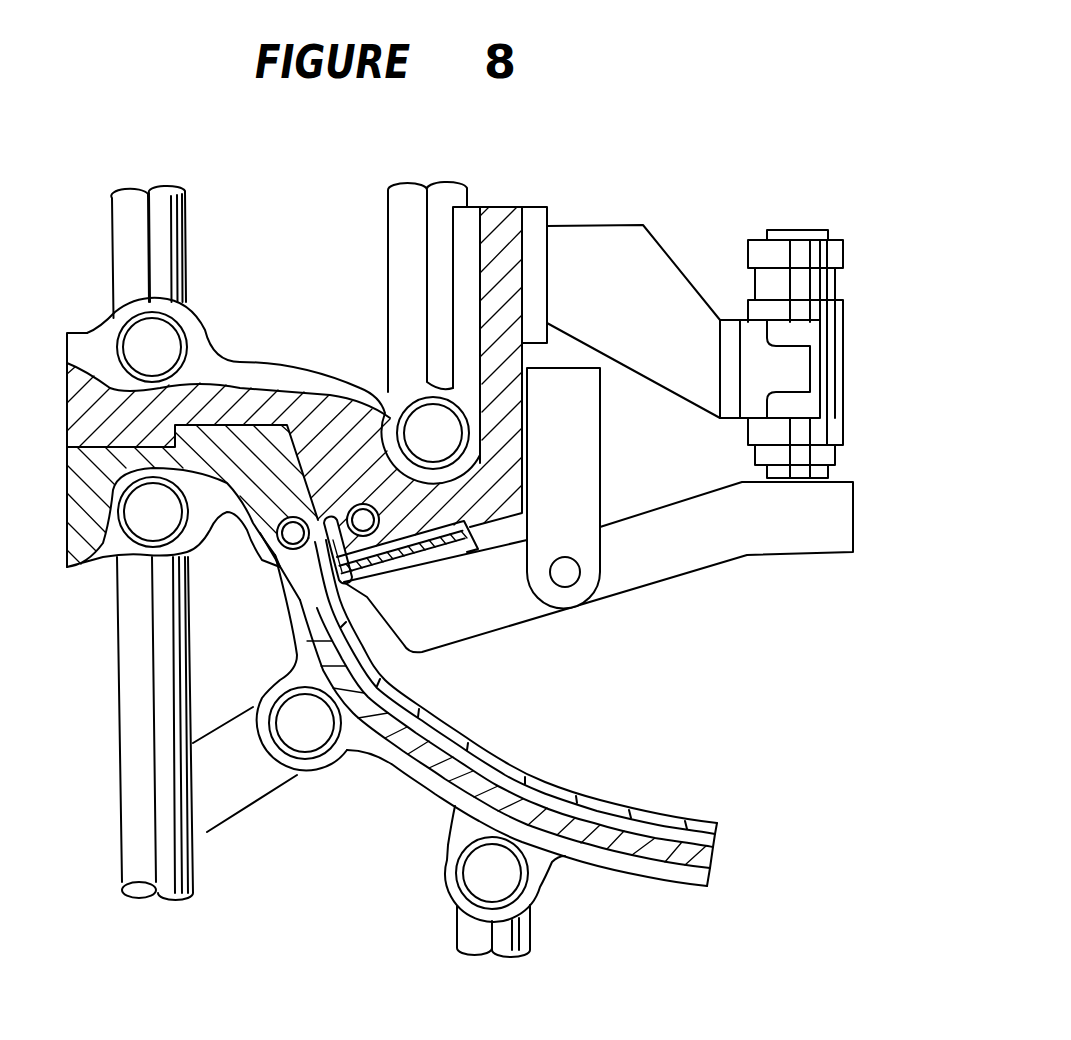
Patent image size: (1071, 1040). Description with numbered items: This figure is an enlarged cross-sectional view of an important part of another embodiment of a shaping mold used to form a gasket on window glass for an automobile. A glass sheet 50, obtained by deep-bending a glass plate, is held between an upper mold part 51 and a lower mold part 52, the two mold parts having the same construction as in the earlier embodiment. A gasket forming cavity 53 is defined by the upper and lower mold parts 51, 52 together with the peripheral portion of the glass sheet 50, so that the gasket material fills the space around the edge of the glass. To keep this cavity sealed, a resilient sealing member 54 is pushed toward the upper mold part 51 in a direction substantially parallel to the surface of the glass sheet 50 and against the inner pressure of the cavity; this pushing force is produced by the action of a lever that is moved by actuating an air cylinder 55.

The glass sheet 50 is at (557, 777).
The upper mold part 51 is at (313, 437).
The lower mold part 52 is at (390, 747).
The gasket forming cavity 53 is at (318, 562).
The resilient sealing member 54 is at (403, 563).
The air cylinder 55 is at (818, 373).